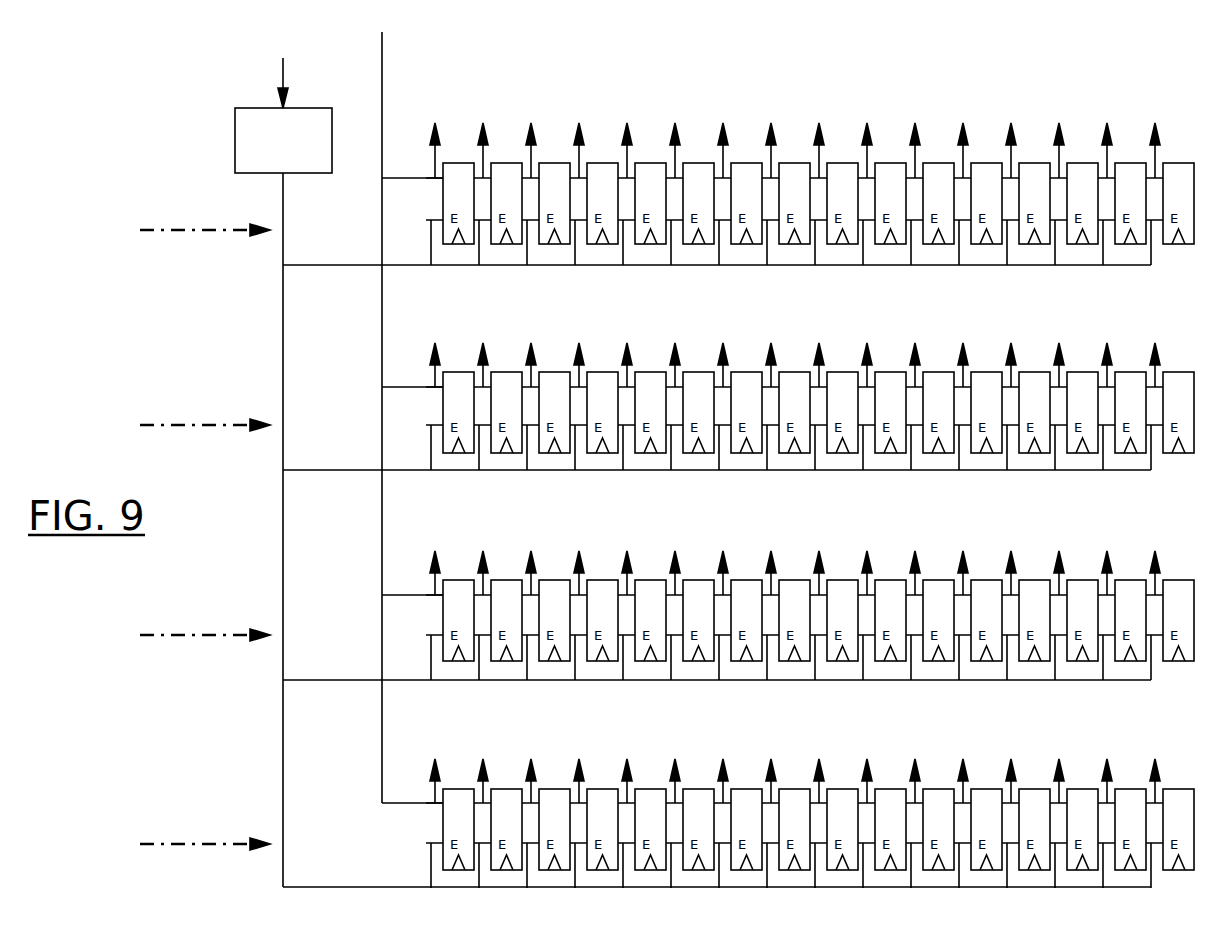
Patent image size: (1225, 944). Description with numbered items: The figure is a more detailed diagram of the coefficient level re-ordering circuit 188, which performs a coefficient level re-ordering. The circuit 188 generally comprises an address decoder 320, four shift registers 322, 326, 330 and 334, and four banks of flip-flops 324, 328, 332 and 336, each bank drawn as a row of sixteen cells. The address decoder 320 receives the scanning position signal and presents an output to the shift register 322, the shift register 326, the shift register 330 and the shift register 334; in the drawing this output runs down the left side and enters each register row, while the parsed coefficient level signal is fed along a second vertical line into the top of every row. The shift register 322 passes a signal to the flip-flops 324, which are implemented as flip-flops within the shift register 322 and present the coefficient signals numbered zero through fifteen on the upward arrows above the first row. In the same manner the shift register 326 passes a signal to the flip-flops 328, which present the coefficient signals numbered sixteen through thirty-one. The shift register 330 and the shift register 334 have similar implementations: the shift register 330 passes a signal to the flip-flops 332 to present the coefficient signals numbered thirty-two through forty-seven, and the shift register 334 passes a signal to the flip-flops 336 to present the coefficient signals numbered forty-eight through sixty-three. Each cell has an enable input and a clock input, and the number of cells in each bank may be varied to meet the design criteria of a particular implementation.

The coefficient level re-ordering circuit 188 is at (1200, 84).
The address decoder 320 is at (303, 107).
The shift register 322 is at (667, 159).
The flip-flops 324 is at (434, 200).
The shift register 326 is at (667, 371).
The flip-flops 328 is at (434, 404).
The shift register 330 is at (667, 580).
The flip-flops 332 is at (433, 617).
The shift register 334 is at (667, 788).
The flip-flops 336 is at (432, 823).